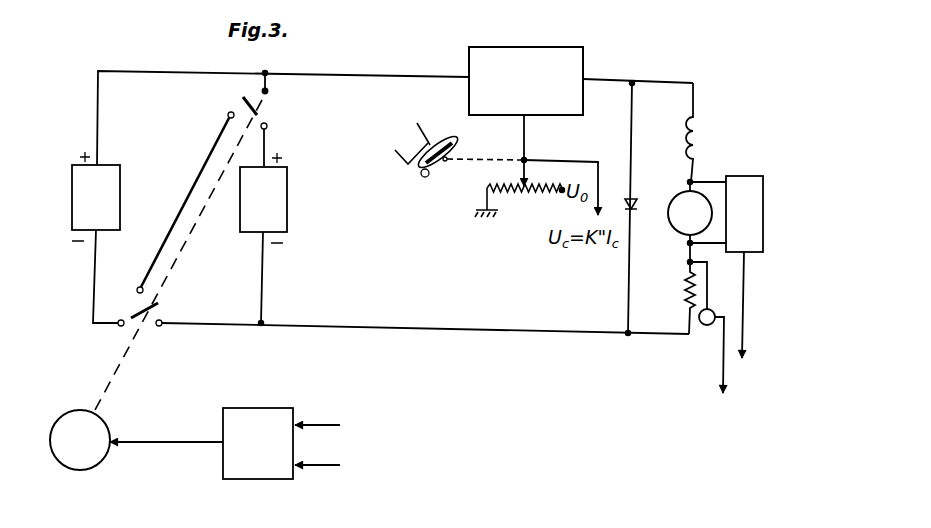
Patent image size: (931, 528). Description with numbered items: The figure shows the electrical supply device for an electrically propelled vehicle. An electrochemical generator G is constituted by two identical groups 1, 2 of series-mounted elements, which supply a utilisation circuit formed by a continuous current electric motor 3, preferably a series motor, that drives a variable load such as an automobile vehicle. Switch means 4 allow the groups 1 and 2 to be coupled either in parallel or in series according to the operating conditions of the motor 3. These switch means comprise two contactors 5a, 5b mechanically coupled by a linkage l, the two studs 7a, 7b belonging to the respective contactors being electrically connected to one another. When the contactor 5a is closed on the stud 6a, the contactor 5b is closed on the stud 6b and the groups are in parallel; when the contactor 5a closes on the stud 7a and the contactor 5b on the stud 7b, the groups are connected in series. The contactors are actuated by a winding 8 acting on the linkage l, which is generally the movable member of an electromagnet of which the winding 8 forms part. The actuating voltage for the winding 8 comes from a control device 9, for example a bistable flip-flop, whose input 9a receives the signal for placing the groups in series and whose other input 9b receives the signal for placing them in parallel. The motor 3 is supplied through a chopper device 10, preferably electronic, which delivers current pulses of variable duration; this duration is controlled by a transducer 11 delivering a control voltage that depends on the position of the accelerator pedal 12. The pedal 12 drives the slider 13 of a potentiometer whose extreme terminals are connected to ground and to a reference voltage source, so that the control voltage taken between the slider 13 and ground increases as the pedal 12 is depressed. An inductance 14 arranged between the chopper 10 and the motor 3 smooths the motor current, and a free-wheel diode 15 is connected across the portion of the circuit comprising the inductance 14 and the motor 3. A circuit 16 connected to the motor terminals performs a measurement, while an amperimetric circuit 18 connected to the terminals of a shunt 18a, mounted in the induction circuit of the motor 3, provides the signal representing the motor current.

The electrochemical generator G is at (157, 148).
The group of series mounted elements 1 is at (96, 196).
The group of series mounted elements 2 is at (263, 198).
The continuous current electric motor 3 is at (689, 223).
The switch means 4 is at (282, 133).
The contactor 5a is at (137, 312).
The contactor 5b is at (259, 110).
The stud 6a is at (160, 326).
The stud 6b is at (270, 91).
The stud 7a is at (137, 289).
The stud 7b is at (187, 191).
The linkage l is at (182, 243).
The winding 8 is at (92, 432).
The control device 9 is at (201, 443).
The input 9a is at (316, 424).
The input 9b is at (318, 467).
The chopper device 10 is at (532, 58).
The transducer 11 is at (520, 195).
The accelerator pedal 12 is at (432, 164).
The slider 13 is at (524, 176).
The inductance 14 is at (700, 131).
The free-wheel diode 15 is at (637, 204).
The circuit 16 is at (737, 186).
The amperimetric circuit 18 is at (705, 326).
The shunt 18a is at (687, 287).